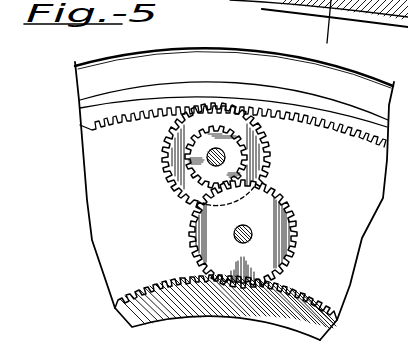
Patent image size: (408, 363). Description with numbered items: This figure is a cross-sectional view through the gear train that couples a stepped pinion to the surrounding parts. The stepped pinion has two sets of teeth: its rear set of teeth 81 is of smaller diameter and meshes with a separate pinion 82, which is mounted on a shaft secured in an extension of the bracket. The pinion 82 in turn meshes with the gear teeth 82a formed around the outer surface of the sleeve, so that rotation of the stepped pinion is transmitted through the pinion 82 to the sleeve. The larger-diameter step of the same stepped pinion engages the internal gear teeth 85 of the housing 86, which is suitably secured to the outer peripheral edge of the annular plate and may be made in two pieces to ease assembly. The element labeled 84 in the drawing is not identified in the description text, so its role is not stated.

The housing 86 is at (316, 70).
The internal gear teeth 85 is at (138, 113).
The ring gear 84 is at (173, 155).
The rear set of teeth 81 is at (190, 164).
The pinion 82 is at (193, 235).
The gear teeth 82a is at (170, 280).